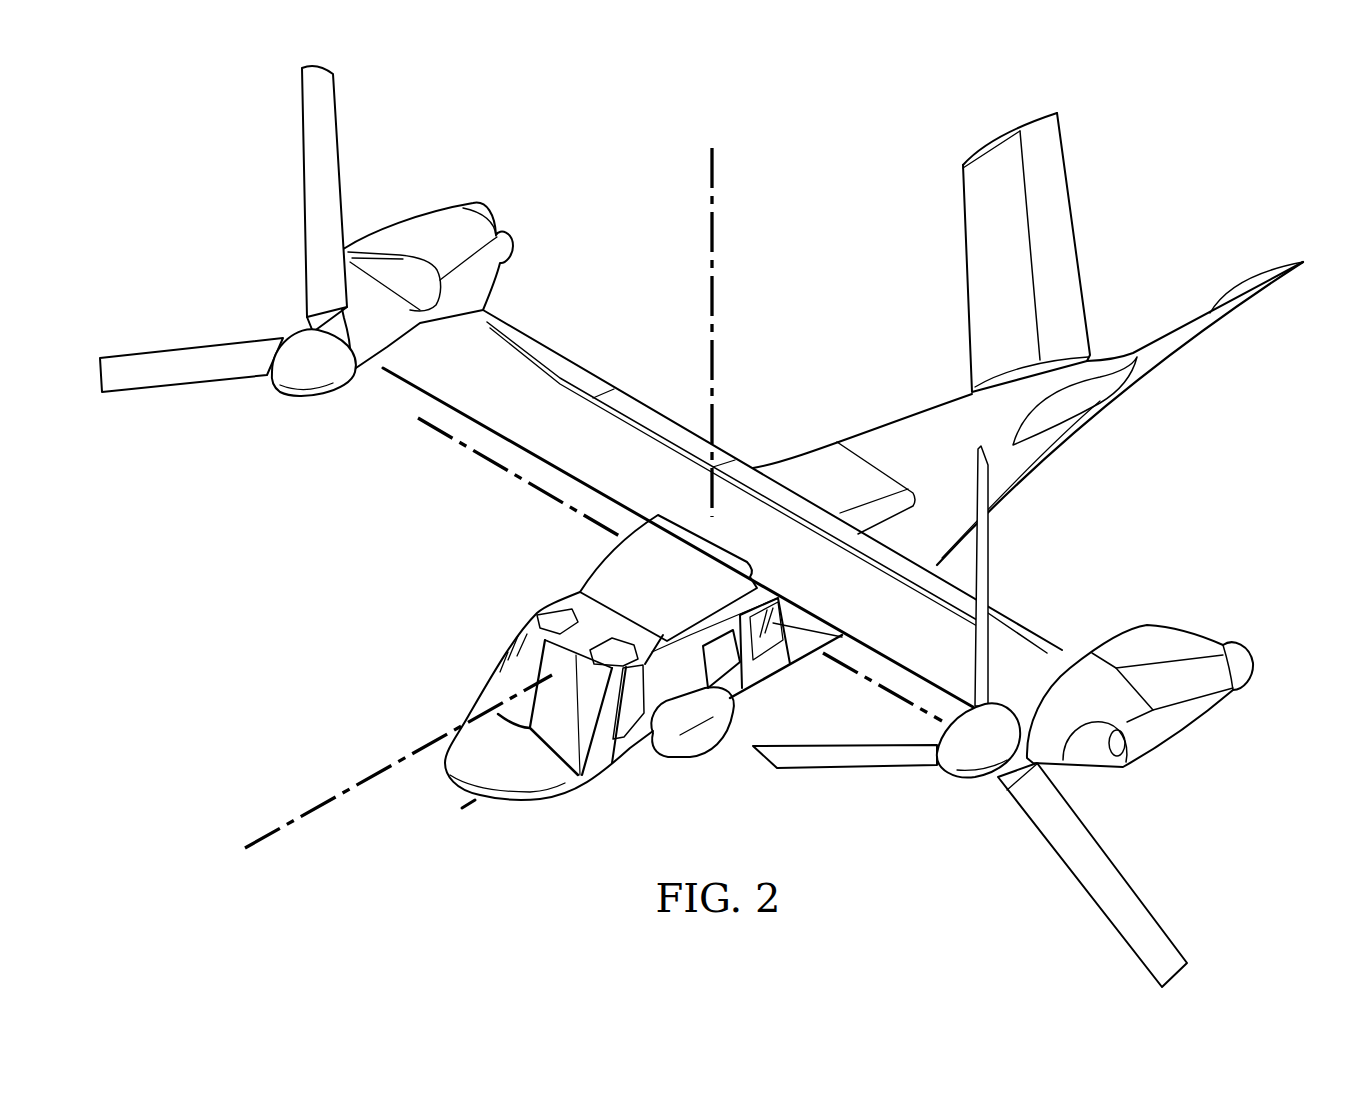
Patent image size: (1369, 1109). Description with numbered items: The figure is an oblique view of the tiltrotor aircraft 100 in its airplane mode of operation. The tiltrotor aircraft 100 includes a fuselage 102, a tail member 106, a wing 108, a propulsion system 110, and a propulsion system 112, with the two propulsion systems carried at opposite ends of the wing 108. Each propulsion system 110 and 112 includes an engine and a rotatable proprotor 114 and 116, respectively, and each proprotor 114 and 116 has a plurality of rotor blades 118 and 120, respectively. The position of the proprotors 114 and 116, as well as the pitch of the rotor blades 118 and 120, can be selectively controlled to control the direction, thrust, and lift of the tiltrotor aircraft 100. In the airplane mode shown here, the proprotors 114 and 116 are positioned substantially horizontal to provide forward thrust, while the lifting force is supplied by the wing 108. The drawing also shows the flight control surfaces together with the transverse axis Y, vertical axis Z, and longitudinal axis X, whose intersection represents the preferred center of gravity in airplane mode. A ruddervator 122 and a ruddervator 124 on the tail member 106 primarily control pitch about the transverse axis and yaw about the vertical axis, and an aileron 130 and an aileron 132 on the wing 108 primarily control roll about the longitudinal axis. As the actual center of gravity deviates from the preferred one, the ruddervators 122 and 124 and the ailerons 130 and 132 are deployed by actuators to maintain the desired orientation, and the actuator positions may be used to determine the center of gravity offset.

The tiltrotor aircraft 100 is at (701, 526).
The fuselage 102 is at (527, 805).
The tail member 106 is at (1068, 190).
The wing 108 is at (577, 480).
The propulsion system 110 is at (1003, 716).
The propulsion system 112 is at (338, 286).
The proprotor 114 is at (955, 781).
The proprotor 116 is at (277, 387).
The rotor blades 118 is at (989, 560).
The rotor blades 120 is at (300, 150).
The ruddervator 122 is at (1183, 323).
The ruddervator 124 is at (1067, 260).
The aileron 130 is at (1057, 640).
The aileron 132 is at (537, 347).